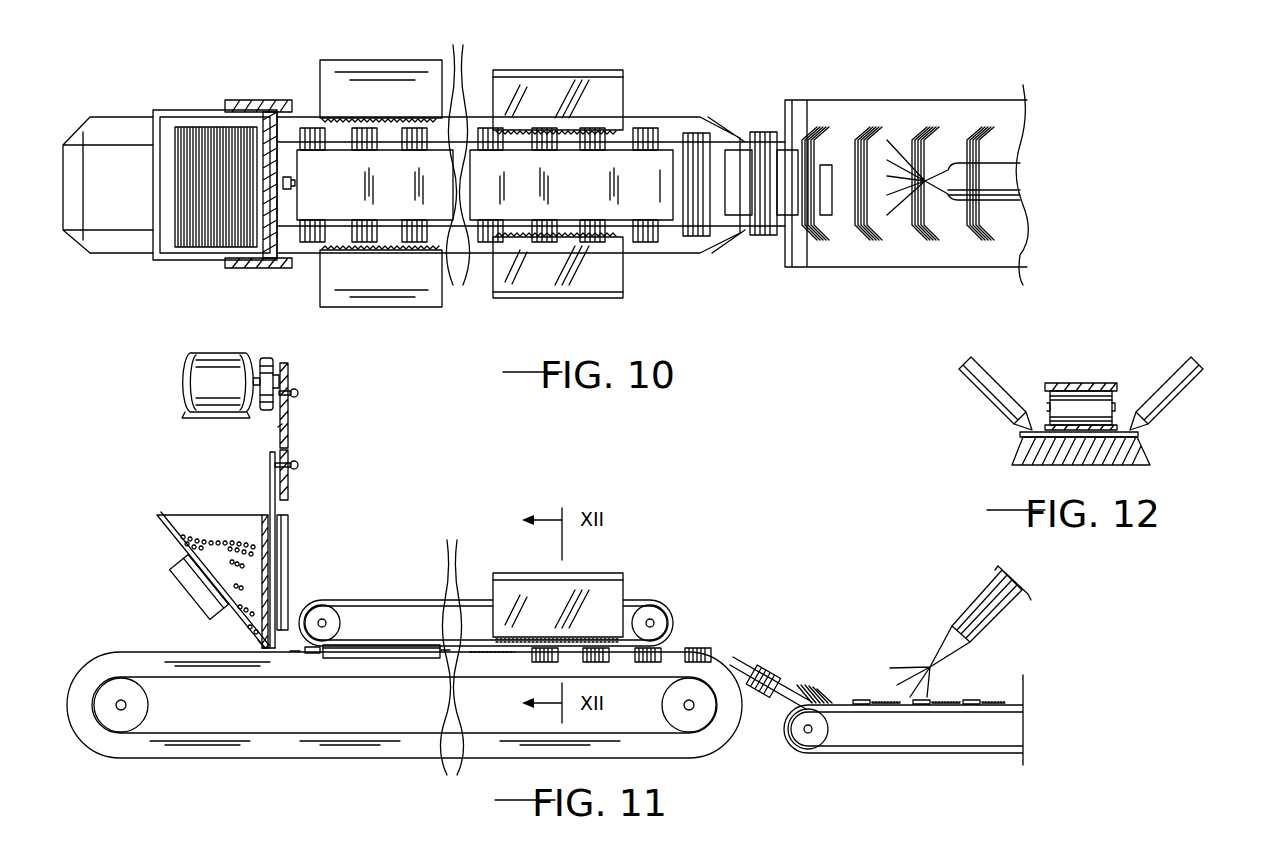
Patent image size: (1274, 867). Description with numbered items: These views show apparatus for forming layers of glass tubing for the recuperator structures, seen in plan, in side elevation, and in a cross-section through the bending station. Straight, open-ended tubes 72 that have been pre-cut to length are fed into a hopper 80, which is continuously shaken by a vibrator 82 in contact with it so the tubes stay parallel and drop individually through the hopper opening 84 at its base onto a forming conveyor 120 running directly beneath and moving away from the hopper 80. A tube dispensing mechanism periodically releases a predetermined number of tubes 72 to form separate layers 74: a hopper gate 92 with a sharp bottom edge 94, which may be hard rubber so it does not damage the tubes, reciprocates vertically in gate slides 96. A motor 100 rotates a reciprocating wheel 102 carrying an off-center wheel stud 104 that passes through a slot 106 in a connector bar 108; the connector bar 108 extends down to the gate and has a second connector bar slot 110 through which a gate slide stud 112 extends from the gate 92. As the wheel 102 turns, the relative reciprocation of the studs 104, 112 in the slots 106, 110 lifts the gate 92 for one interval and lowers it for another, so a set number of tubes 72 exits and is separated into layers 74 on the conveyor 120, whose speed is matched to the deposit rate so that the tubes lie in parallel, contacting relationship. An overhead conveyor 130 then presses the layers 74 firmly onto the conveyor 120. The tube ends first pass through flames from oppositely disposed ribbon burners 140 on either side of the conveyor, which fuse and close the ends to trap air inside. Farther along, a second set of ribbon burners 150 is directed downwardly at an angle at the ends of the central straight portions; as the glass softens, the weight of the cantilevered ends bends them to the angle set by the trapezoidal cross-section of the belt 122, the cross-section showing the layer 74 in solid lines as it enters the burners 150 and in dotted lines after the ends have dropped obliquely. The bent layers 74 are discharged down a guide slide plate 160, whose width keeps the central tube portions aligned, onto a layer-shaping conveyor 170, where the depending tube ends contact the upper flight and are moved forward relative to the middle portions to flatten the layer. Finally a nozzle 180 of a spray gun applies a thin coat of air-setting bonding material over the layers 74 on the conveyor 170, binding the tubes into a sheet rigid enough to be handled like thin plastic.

In FIG. 10, the tubes 72 is at (203, 224).
In FIG. 11, the tubes 72 is at (205, 540).
In FIG. 10, the layers 74 is at (318, 243).
In FIG. 11, the layers 74 is at (533, 664).
In FIG. 12, the layers 74 is at (1025, 437).
In FIG. 10, the hopper 80 is at (207, 110).
In FIG. 11, the hopper 80 is at (160, 536).
In FIG. 11, the vibrator 82 is at (183, 589).
In FIG. 11, the hopper opening 84 is at (258, 641).
In FIG. 10, the hopper gate 92 is at (286, 126).
In FIG. 11, the hopper gate 92 is at (270, 490).
In FIG. 11, the sharp bottom edge 94 is at (274, 648).
In FIG. 10, the gate slides 96 is at (260, 101).
In FIG. 11, the gate slides 96 is at (290, 549).
In FIG. 11, the motor 100 is at (179, 378).
In FIG. 11, the reciprocating wheel 102 is at (273, 362).
In FIG. 11, the wheel stud 104 is at (298, 393).
In FIG. 11, the slot 106 is at (289, 408).
In FIG. 11, the connector bar 108 is at (279, 427).
In FIG. 11, the second connector bar slot 110 is at (289, 483).
In FIG. 11, the gate slide stud 112 is at (298, 465).
In FIG. 10, the forming conveyor 120 is at (660, 266).
In FIG. 11, the forming conveyor 120 is at (264, 770).
In FIG. 11, the belt 122 is at (150, 681).
In FIG. 12, the belt 122 is at (1148, 467).
In FIG. 12, the overhead conveyor 130 is at (1060, 383).
In FIG. 10, the ribbon burners 140 is at (336, 61).
In FIG. 11, the ribbon burners 140 is at (375, 656).
In FIG. 10, the second set of ribbon burners 150 is at (568, 70).
In FIG. 11, the second set of ribbon burners 150 is at (598, 573).
In FIG. 12, the second set of ribbon burners 150 is at (1190, 363).
In FIG. 10, the guide slide plate 160 is at (782, 157).
In FIG. 10, the layer-shaping conveyor 170 is at (932, 100).
In FIG. 11, the layer-shaping conveyor 170 is at (880, 755).
In FIG. 10, the nozzle 180 is at (1010, 181).
In FIG. 11, the nozzle 180 is at (986, 590).